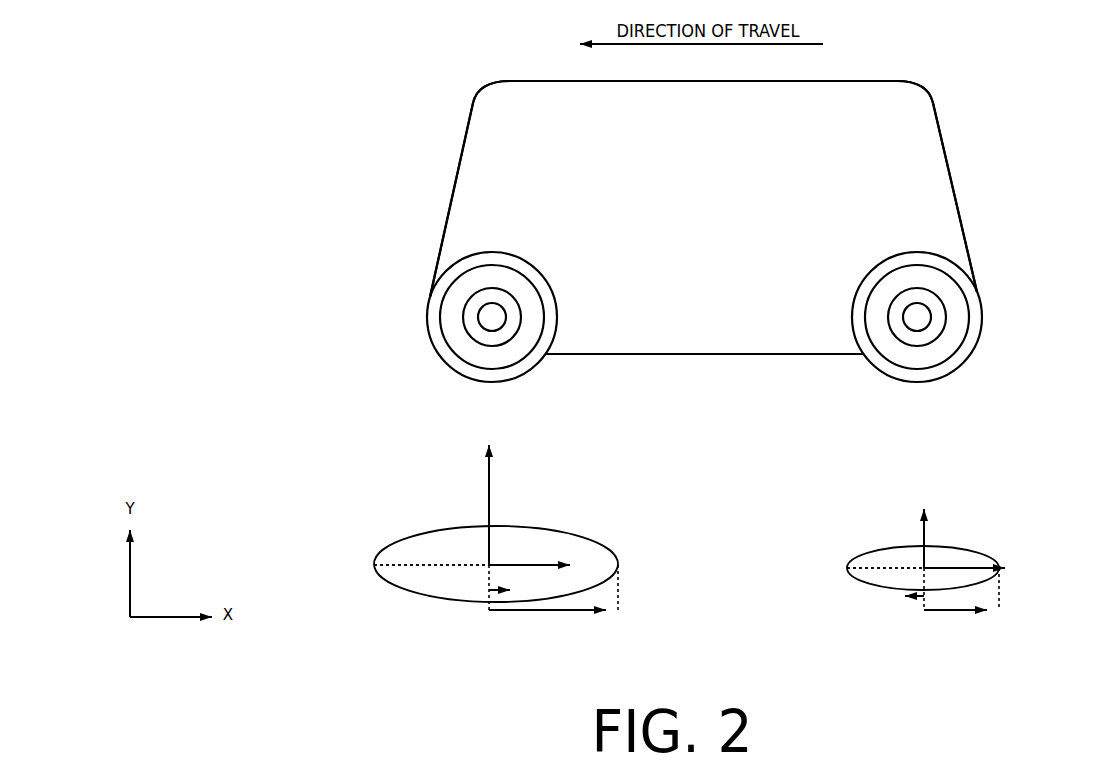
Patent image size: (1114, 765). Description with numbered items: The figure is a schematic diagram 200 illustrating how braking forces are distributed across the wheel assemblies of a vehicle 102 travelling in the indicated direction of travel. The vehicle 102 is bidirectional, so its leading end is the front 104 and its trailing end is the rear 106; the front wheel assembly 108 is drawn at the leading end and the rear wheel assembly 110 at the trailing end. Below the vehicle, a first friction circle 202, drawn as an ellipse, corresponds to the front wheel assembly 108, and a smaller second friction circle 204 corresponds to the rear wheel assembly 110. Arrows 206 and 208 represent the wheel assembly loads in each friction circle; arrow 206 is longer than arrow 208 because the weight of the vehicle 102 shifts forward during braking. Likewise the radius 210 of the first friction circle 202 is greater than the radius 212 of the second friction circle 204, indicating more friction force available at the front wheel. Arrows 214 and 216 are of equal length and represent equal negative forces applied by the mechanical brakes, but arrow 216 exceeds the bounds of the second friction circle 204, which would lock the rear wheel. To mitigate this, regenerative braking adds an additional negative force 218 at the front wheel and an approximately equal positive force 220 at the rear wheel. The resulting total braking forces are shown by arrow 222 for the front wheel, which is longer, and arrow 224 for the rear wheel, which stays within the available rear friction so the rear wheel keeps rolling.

The schematic diagram 200 is at (214, 98).
The vehicle 102 is at (687, 220).
The front 104 is at (433, 155).
The rear 106 is at (960, 167).
The front wheel assembly 108 is at (417, 319).
The rear wheel assembly 110 is at (992, 320).
The first friction circle 202 is at (416, 470).
The second friction circle 204 is at (851, 531).
The arrow 206 is at (489, 500).
The arrow 208 is at (924, 530).
The radius 210 is at (400, 563).
The radius 212 is at (873, 571).
The arrow 214 is at (542, 563).
The arrow 216 is at (980, 566).
The additional negative force 218 is at (502, 589).
The positive force 220 is at (918, 598).
The arrow 222 is at (553, 612).
The arrow 224 is at (958, 612).